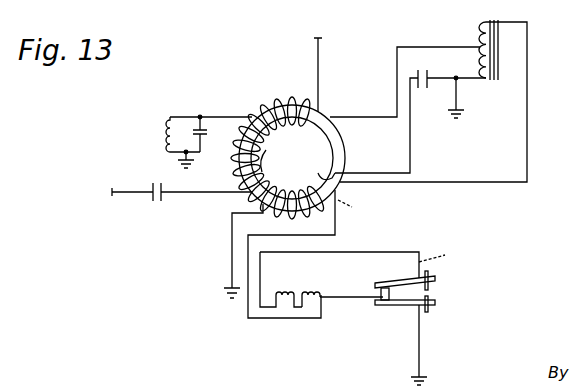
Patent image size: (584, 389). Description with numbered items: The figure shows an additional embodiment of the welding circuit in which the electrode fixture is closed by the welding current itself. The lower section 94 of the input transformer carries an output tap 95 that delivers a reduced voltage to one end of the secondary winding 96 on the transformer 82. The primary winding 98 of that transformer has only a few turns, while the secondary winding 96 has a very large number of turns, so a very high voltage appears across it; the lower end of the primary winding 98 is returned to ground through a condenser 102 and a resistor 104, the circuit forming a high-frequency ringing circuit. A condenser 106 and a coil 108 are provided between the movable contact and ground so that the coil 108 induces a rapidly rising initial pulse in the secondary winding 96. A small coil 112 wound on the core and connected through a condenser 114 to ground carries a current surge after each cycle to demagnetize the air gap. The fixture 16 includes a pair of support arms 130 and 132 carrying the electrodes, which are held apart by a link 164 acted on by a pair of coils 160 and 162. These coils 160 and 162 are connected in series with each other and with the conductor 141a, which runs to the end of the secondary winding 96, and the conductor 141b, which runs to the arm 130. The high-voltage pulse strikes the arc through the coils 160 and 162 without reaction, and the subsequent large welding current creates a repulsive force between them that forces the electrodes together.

The fixture 16 is at (405, 302).
The transformer 82 is at (330, 114).
The lower section of the transformer 94 is at (479, 61).
The output tap 95 is at (477, 43).
The secondary winding 96 is at (258, 114).
The primary winding 98 is at (292, 98).
The condenser 102 is at (204, 138).
The resistor 104 is at (164, 136).
The condenser 106 is at (168, 196).
The coil 108 is at (264, 172).
The coil 112 is at (322, 179).
The condenser 114 is at (430, 90).
The support arm 130 is at (405, 278).
The support arm 132 is at (405, 307).
The conductor 141a is at (363, 207).
The conductor 141b is at (452, 253).
The coil 160 is at (285, 294).
The coil 162 is at (313, 294).
The link 164 is at (343, 295).